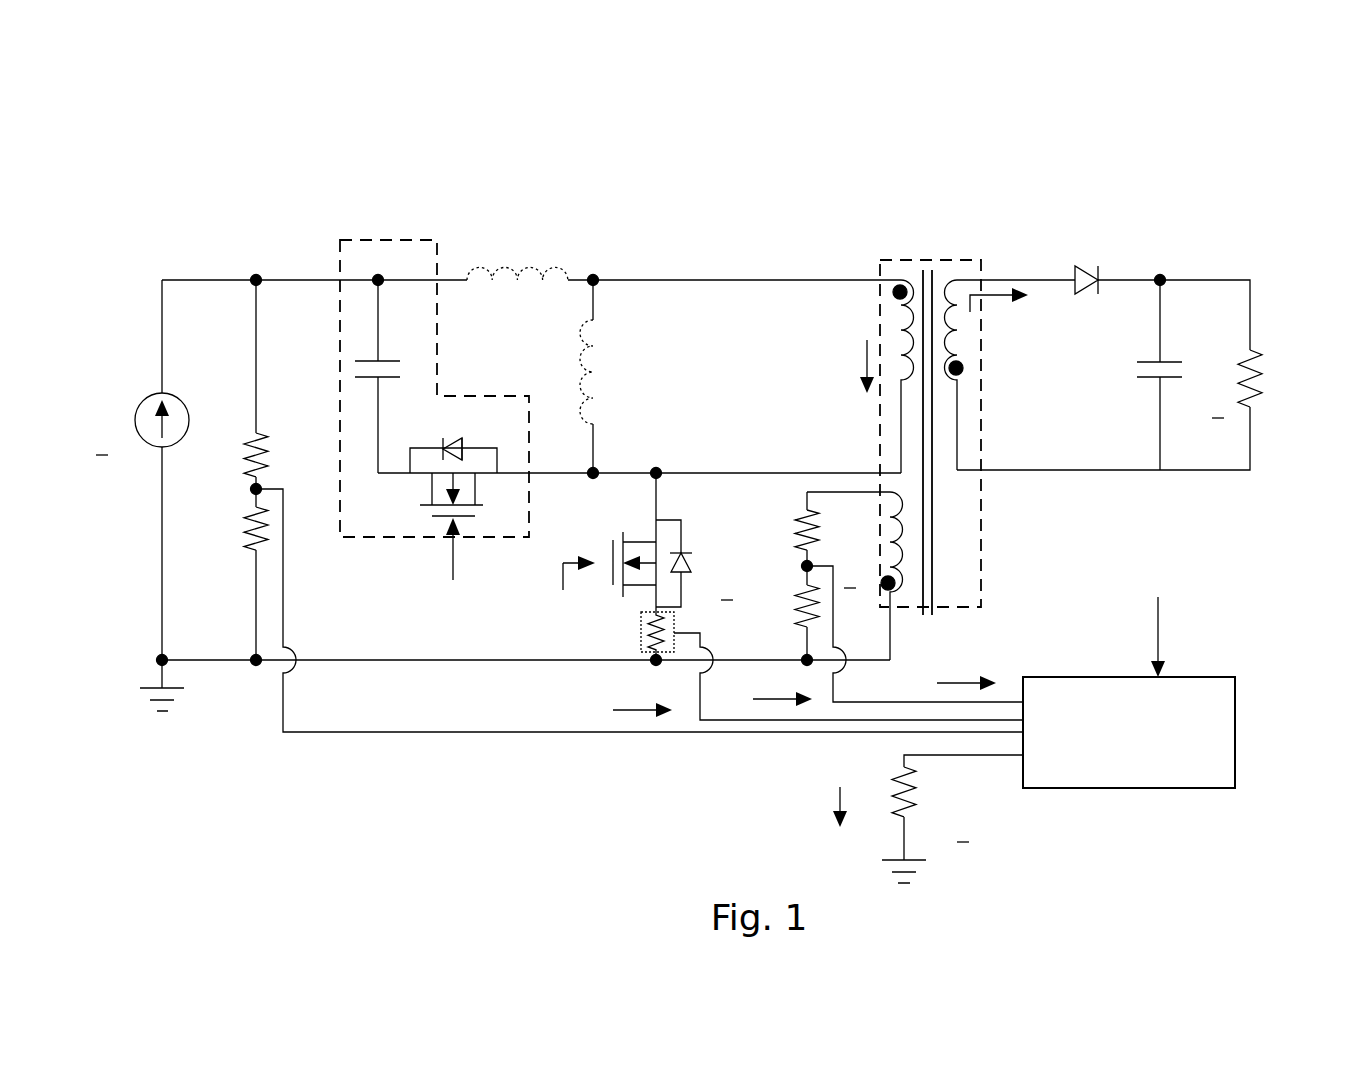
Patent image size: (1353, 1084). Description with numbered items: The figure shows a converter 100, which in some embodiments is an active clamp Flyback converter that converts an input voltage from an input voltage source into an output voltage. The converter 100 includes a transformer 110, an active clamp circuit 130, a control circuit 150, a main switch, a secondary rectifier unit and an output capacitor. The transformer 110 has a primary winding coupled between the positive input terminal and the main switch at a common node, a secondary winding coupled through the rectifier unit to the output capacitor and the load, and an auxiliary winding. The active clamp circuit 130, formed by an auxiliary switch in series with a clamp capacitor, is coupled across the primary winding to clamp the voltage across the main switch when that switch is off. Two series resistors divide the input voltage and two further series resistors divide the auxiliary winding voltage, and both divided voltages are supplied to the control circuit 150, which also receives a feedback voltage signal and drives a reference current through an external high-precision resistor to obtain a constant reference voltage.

The converter 100 is at (186, 116).
The active clamp circuit 130 is at (406, 240).
The transformer 110 is at (951, 258).
The control circuit 150 is at (1146, 760).